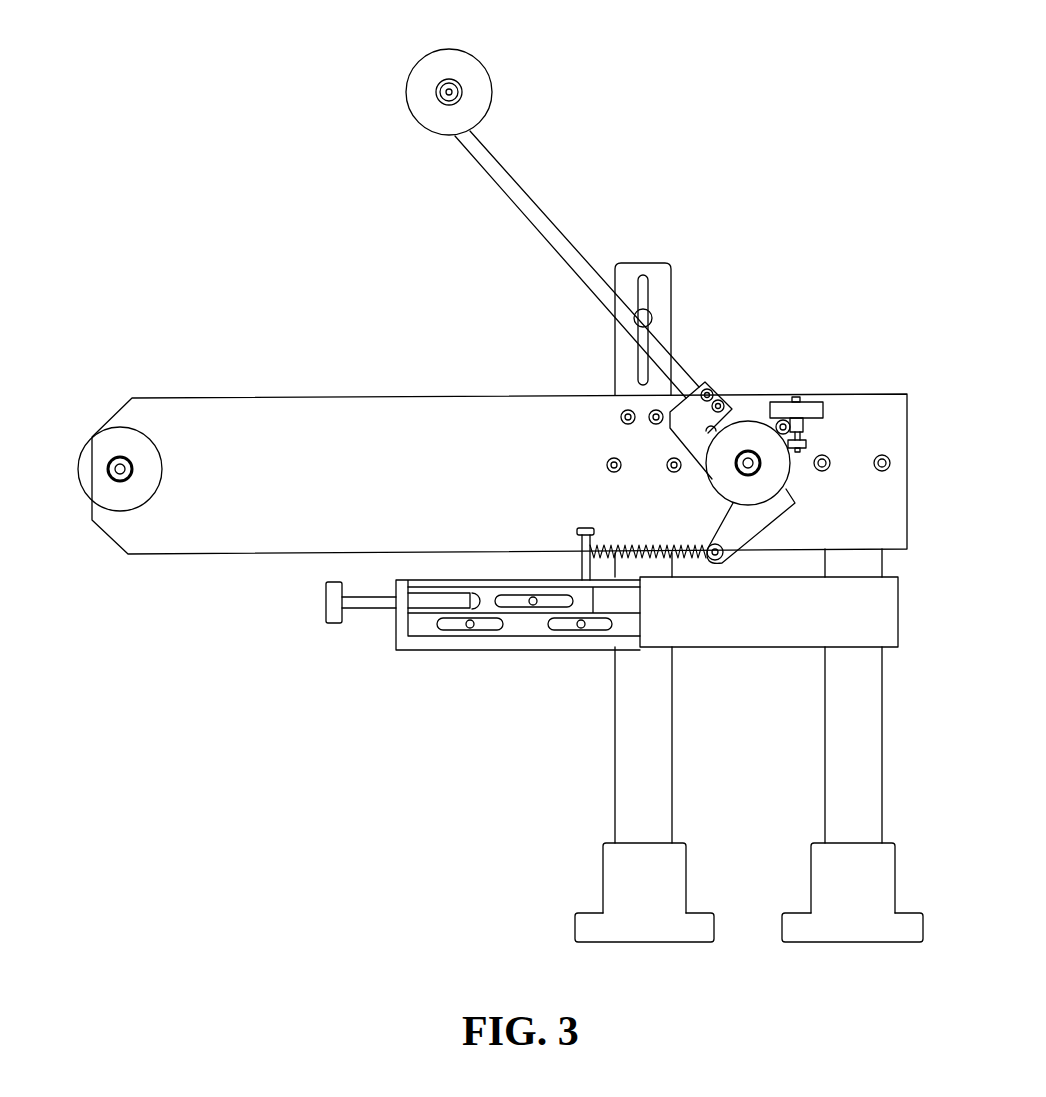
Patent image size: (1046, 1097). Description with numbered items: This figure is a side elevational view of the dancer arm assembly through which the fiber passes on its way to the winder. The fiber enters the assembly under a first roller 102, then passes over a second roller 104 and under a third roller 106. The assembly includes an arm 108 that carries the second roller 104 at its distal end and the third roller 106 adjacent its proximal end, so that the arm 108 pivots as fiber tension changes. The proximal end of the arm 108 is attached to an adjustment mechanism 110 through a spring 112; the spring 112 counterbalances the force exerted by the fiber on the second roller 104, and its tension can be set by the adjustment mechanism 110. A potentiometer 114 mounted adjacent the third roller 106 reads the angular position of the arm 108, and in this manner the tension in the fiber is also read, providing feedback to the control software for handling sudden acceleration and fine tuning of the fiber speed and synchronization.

The first roller 102 is at (110, 440).
The second roller 104 is at (470, 75).
The third roller 106 is at (740, 438).
The arm 108 is at (570, 253).
The adjustment mechanism 110 is at (503, 632).
The spring 112 is at (640, 560).
The potentiometer 114 is at (798, 412).